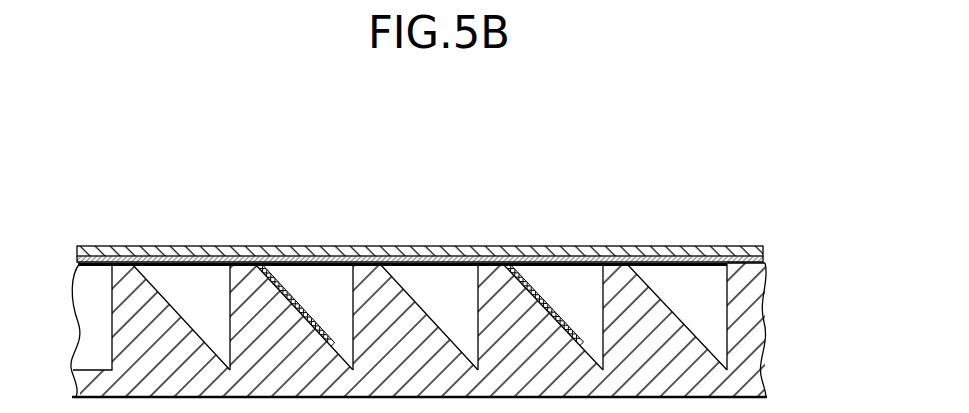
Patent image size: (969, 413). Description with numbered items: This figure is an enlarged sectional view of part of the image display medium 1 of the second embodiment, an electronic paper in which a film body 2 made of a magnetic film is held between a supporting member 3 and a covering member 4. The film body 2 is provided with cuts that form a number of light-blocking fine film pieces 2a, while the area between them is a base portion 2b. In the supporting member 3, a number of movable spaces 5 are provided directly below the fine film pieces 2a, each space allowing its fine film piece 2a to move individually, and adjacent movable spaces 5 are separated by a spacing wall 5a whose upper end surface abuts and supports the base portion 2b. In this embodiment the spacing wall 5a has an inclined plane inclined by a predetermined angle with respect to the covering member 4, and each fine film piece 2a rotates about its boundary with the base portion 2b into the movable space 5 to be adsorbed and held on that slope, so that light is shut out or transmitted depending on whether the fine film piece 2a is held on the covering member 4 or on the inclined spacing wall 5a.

The image display medium 1 is at (686, 124).
The film body 2 is at (740, 250).
The fine film piece 2a is at (290, 302).
The base portion 2b is at (364, 254).
The supporting member 3 is at (743, 375).
The covering member 4 is at (697, 256).
The movable space 5 is at (322, 286).
The spacing wall 5a is at (228, 297).